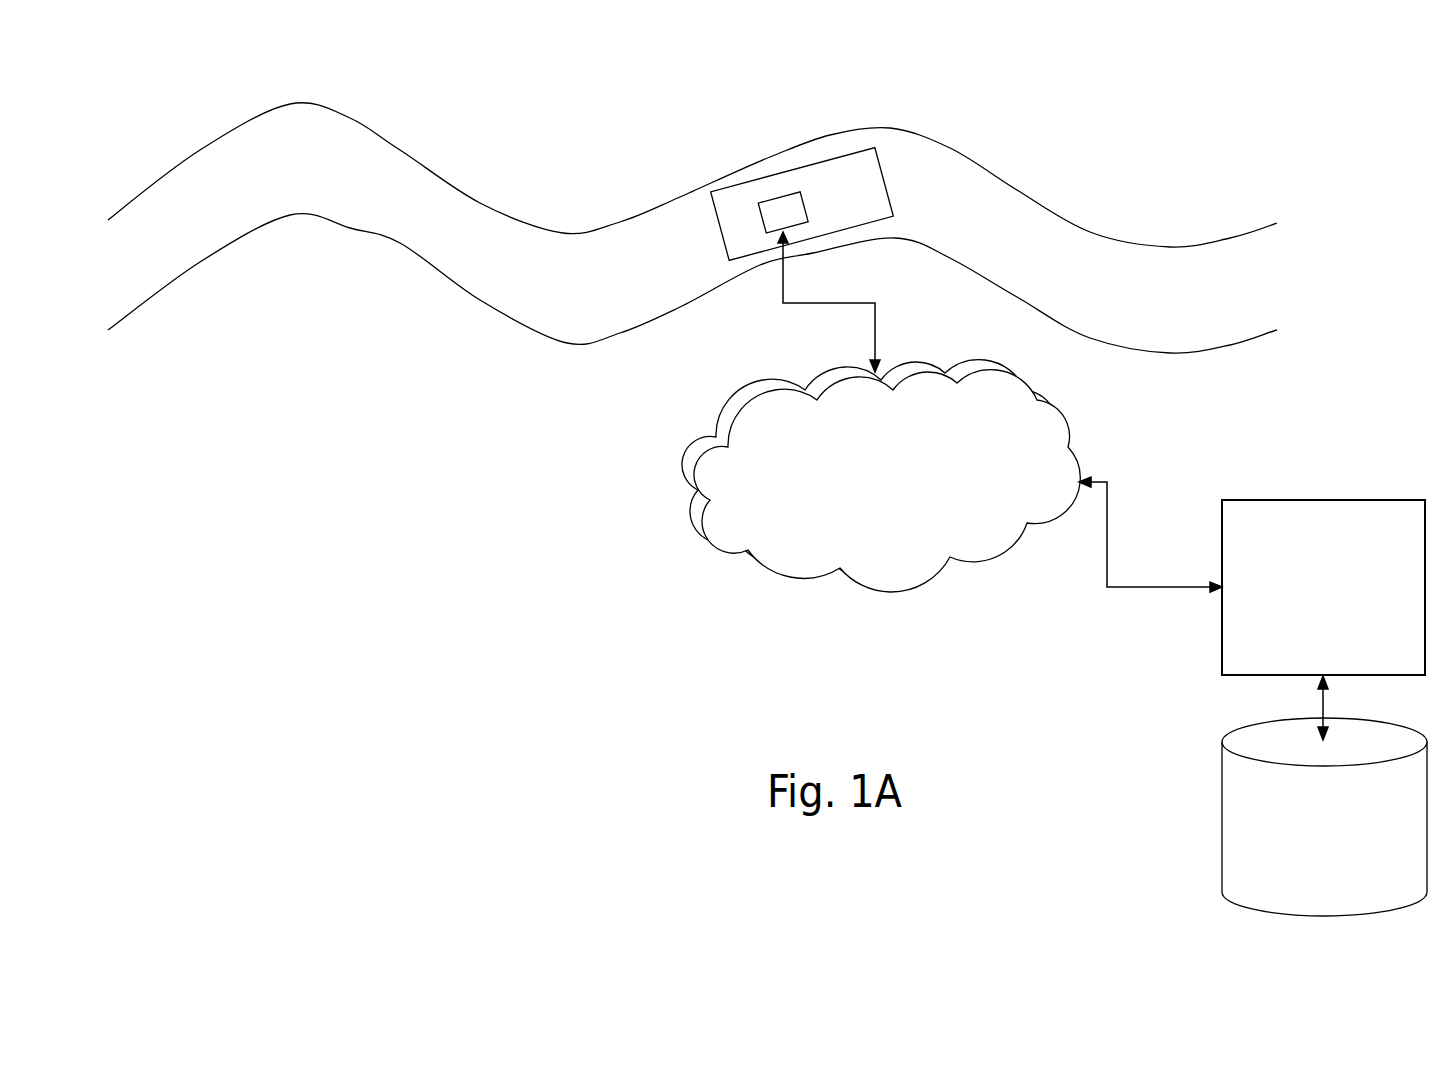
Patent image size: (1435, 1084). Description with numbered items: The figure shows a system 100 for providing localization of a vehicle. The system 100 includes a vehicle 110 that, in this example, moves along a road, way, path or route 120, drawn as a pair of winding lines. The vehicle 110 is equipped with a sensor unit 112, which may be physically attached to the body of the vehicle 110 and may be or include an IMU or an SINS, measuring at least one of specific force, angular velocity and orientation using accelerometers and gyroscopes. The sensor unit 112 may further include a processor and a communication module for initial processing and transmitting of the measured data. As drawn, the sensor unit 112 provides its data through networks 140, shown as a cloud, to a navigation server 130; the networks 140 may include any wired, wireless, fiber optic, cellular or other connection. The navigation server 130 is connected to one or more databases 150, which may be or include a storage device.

The system 100 is at (580, 560).
The vehicle 110 is at (840, 165).
The sensor unit 112 is at (787, 215).
The road 120 is at (1017, 188).
The navigation server 130 is at (1345, 623).
The networks 140 is at (907, 496).
The databases 150 is at (1343, 853).